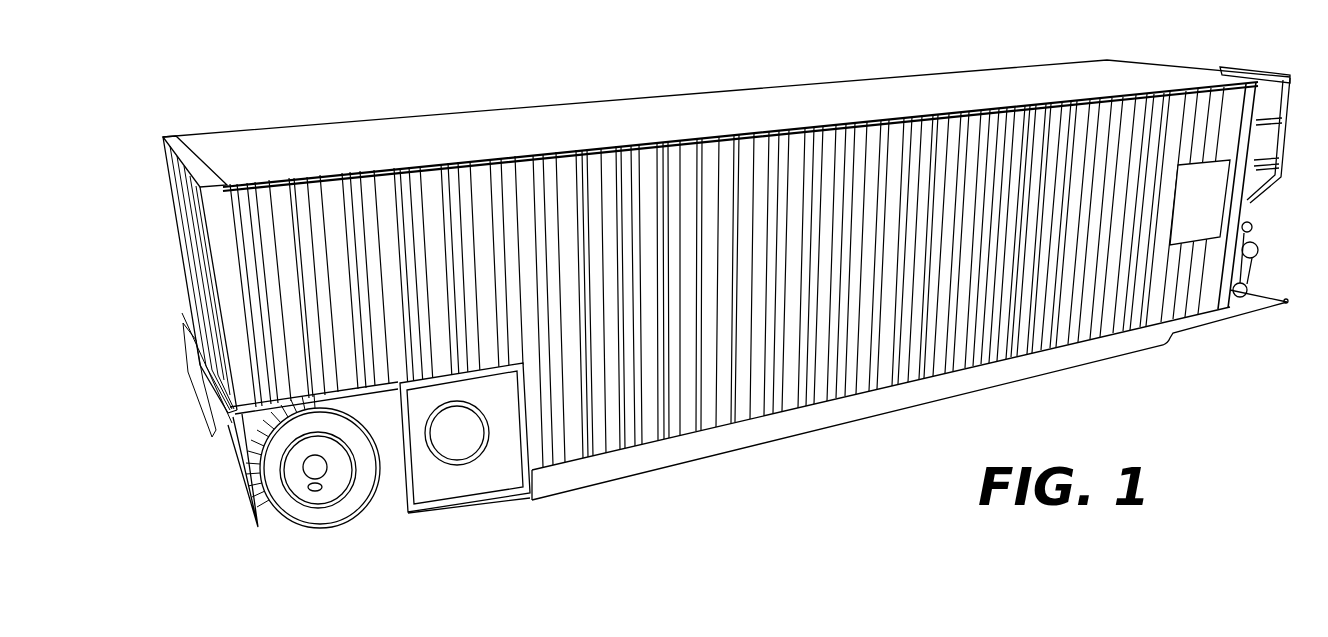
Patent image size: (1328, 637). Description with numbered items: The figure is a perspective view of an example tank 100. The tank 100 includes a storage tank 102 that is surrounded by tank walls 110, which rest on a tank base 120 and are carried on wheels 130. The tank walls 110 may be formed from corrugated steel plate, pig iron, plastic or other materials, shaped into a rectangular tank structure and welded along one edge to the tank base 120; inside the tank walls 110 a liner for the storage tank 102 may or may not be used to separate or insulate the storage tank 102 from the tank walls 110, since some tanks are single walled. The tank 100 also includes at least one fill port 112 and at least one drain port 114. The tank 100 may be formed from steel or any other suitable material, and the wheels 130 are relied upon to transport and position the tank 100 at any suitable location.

The tank 100 is at (178, 91).
The storage tank 102 is at (337, 147).
The tank walls 110 is at (183, 270).
The fill port 112 is at (1250, 223).
The drain port 114 is at (470, 417).
The tank base 120 is at (720, 450).
The wheels 130 is at (323, 517).